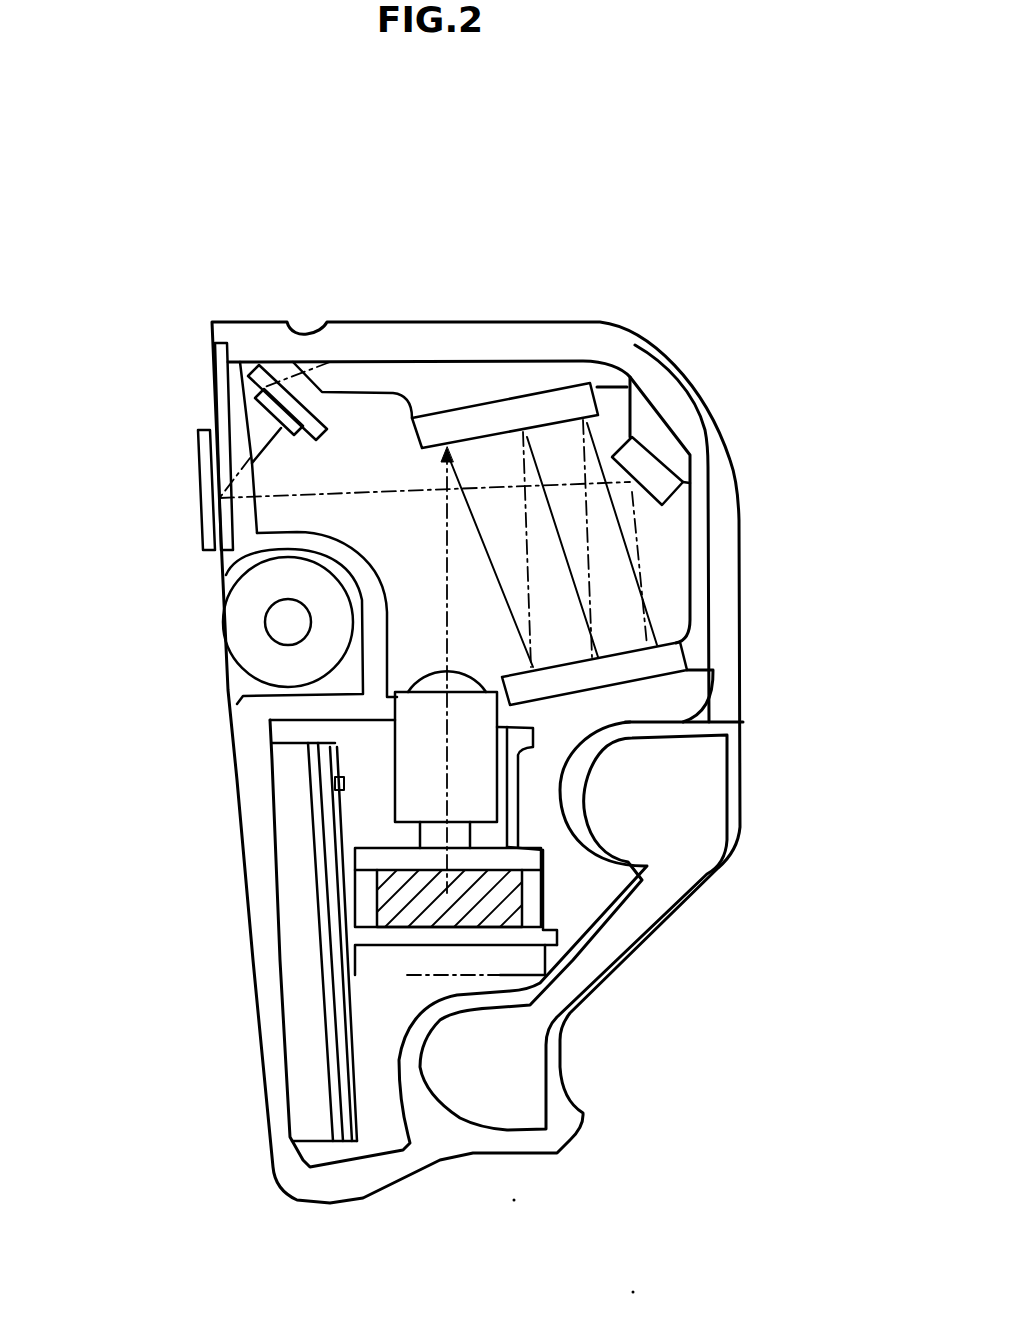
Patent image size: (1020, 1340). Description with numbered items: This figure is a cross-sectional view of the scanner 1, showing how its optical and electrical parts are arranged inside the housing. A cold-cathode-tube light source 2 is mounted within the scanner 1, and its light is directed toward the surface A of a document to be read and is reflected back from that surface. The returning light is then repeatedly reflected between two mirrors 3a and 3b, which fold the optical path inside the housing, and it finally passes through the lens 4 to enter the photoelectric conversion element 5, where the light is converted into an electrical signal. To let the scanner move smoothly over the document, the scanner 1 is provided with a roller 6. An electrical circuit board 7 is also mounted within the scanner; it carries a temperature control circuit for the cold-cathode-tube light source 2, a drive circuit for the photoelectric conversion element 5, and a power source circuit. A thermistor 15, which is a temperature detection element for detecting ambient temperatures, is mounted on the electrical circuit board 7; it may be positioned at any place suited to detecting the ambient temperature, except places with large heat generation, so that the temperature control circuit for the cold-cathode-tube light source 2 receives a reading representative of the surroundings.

The scanner 1 is at (720, 485).
The cold-cathode-tube light source 2 is at (330, 362).
The mirror 3a is at (662, 474).
The mirror 3b is at (673, 657).
The lens 4 is at (467, 797).
The photoelectric conversion element 5 is at (493, 900).
The roller 6 is at (222, 635).
The electrical circuit board 7 is at (300, 1067).
The thermistor 15 is at (344, 784).
The surface of a document to be read A is at (200, 517).